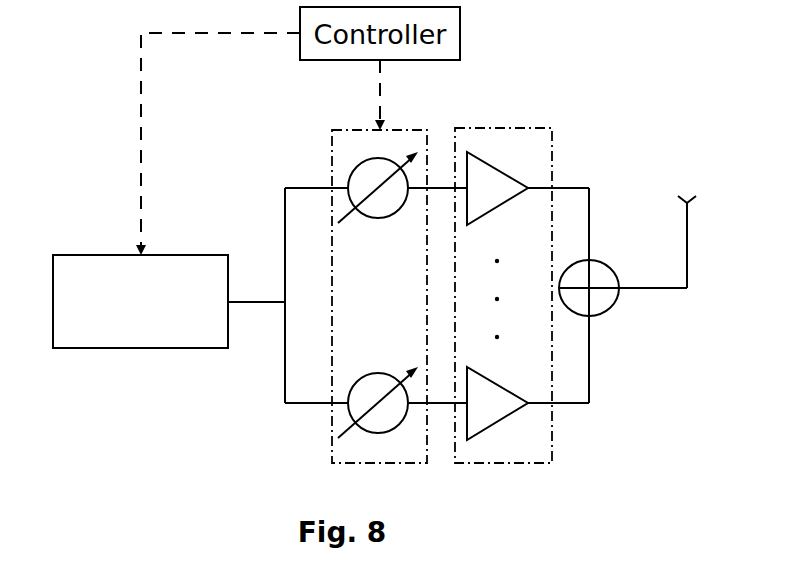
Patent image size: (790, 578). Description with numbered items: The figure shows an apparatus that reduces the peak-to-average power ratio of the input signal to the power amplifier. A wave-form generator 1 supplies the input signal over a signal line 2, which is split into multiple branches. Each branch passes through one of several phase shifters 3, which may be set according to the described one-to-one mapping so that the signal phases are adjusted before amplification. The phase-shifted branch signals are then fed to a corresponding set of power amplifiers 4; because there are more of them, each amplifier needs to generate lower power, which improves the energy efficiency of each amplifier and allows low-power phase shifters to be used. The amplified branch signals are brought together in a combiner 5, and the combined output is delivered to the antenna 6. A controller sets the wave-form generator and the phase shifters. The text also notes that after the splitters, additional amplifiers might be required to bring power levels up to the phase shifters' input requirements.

The wave-form generator 1 is at (140, 323).
The signal line 2 is at (288, 295).
The variable phase shifters 3 is at (384, 294).
The amplifiers 4 is at (522, 287).
The combiner 5 is at (607, 295).
The antenna 6 is at (689, 223).